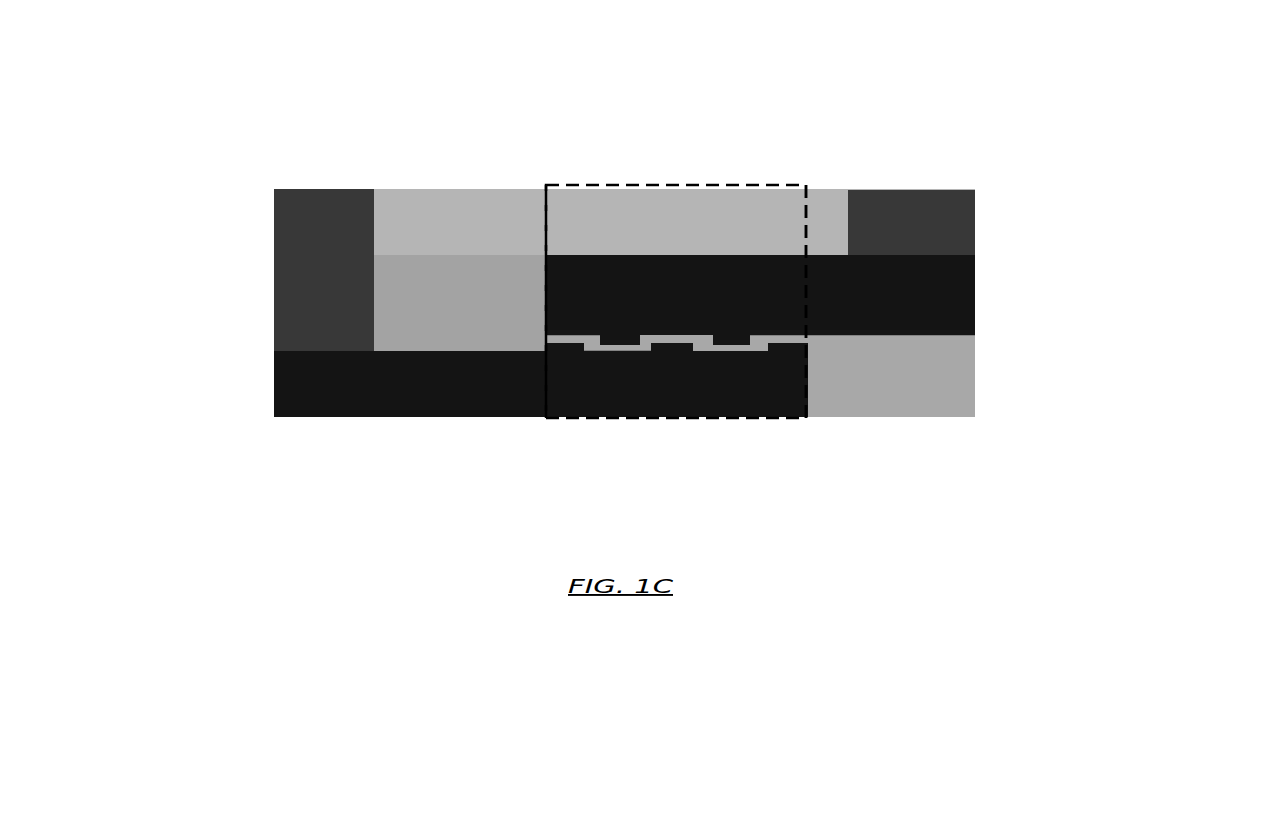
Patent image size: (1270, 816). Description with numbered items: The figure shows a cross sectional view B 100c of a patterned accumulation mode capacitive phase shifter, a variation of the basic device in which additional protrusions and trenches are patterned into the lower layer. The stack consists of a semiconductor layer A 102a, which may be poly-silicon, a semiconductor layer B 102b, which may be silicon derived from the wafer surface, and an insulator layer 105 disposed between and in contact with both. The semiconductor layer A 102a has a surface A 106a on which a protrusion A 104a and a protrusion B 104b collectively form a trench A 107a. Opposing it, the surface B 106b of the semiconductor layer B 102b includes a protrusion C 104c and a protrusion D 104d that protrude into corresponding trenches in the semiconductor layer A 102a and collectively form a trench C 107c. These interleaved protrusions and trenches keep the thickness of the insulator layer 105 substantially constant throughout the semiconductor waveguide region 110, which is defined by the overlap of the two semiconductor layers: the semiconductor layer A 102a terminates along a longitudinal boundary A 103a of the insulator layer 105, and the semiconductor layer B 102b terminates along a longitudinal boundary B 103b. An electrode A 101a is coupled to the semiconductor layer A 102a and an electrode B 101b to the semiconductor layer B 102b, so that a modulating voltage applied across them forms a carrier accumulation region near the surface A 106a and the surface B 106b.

The cross sectional view B 100c is at (656, 234).
The electrode A 101a is at (970, 203).
The electrode B 101b is at (263, 235).
The semiconductor layer A 102a is at (967, 258).
The semiconductor layer B 102b is at (263, 370).
The longitudinal boundary A 103a is at (537, 272).
The longitudinal boundary B 103b is at (802, 368).
The protrusion A 104a is at (725, 301).
The protrusion B 104b is at (725, 317).
The protrusion C 104c is at (498, 363).
The protrusion D 104d is at (674, 380).
The insulator layer 105 is at (797, 331).
The surface A 106a is at (875, 325).
The surface B 106b is at (515, 335).
The trench A 107a is at (745, 316).
The trench C 107c is at (655, 369).
The semiconductor waveguide region 110 is at (787, 236).